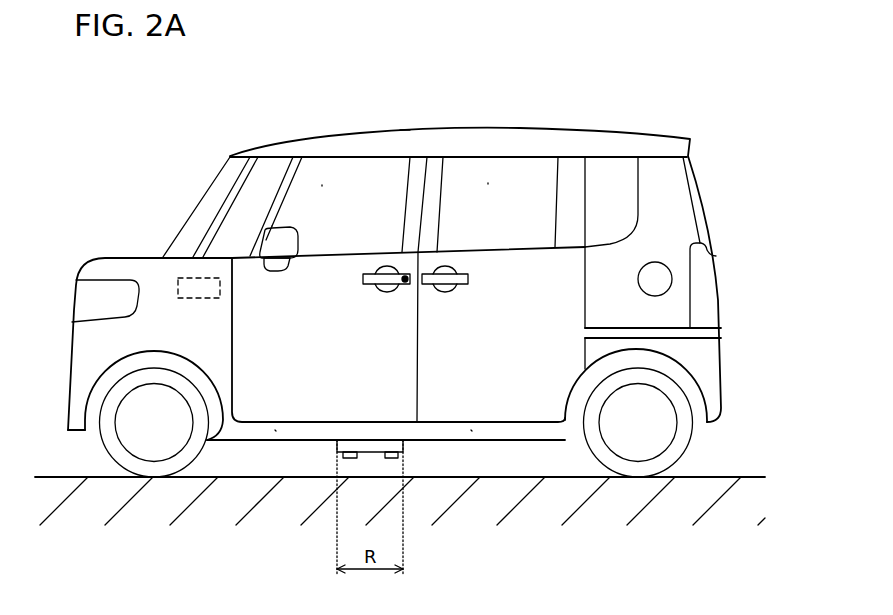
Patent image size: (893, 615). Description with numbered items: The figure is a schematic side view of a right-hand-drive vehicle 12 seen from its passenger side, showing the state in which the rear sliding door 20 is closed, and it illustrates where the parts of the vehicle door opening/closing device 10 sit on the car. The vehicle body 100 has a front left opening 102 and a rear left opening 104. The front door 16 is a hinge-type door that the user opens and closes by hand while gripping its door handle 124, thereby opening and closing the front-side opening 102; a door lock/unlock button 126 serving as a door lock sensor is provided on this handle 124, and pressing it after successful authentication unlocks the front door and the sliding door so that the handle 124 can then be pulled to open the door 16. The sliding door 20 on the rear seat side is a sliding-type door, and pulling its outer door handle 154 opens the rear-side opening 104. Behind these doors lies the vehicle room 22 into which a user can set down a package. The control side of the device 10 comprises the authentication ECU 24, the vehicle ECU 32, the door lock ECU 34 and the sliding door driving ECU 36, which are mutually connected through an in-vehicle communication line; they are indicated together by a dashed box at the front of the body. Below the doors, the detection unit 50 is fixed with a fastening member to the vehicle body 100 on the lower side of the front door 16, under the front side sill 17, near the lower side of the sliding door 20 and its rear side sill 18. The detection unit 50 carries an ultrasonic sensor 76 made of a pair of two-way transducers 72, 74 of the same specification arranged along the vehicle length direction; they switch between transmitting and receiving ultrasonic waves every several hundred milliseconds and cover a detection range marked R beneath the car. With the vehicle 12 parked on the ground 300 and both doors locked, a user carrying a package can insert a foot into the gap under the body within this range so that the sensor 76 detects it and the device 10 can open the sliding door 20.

The vehicle 12 is at (539, 81).
The front door 16 is at (247, 330).
The front side sill 17 is at (275, 430).
The rear side sill 18 is at (471, 430).
The sliding door 20 is at (567, 310).
The vehicle room 22 is at (363, 178).
The authentication ECU 24 is at (129, 241).
The vehicle ECU 32 is at (199, 288).
The door lock ECU 34 is at (199, 288).
The sliding door driving ECU 36 is at (178, 288).
The detection unit 50 is at (393, 445).
The transducer 72 is at (350, 448).
The transducer 74 is at (390, 448).
The ultrasonic sensor 76 is at (364, 399).
The vehicle door opening/closing device 10 is at (368, 460).
The vehicle body 100 is at (405, 130).
The front left opening 102 is at (322, 185).
The rear left opening 104 is at (488, 183).
The door handle 124 is at (390, 273).
The door lock/unlock button 126 is at (406, 287).
The outer door handle 154 is at (468, 278).
The ground 300 is at (727, 477).